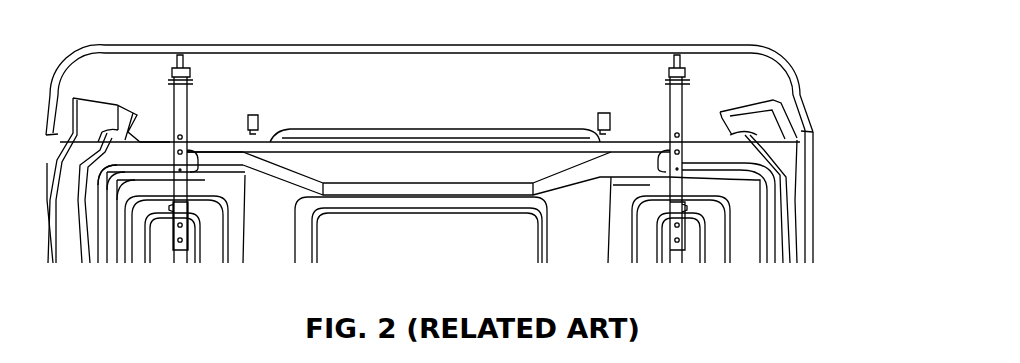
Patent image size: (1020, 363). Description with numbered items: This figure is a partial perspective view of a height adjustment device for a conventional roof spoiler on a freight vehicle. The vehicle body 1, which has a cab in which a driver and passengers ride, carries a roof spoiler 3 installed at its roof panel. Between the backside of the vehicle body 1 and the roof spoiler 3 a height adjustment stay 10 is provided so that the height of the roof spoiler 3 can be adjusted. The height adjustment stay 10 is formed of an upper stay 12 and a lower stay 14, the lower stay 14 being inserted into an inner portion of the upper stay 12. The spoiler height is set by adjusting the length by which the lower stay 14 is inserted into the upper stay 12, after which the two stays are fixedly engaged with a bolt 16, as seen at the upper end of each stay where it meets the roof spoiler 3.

The vehicle body 1 is at (745, 243).
The roof spoiler 3 is at (700, 49).
The height adjustment stay 10 is at (761, 213).
The upper stay 12 is at (757, 172).
The lower stay 14 is at (680, 190).
The bolt 16 is at (668, 142).